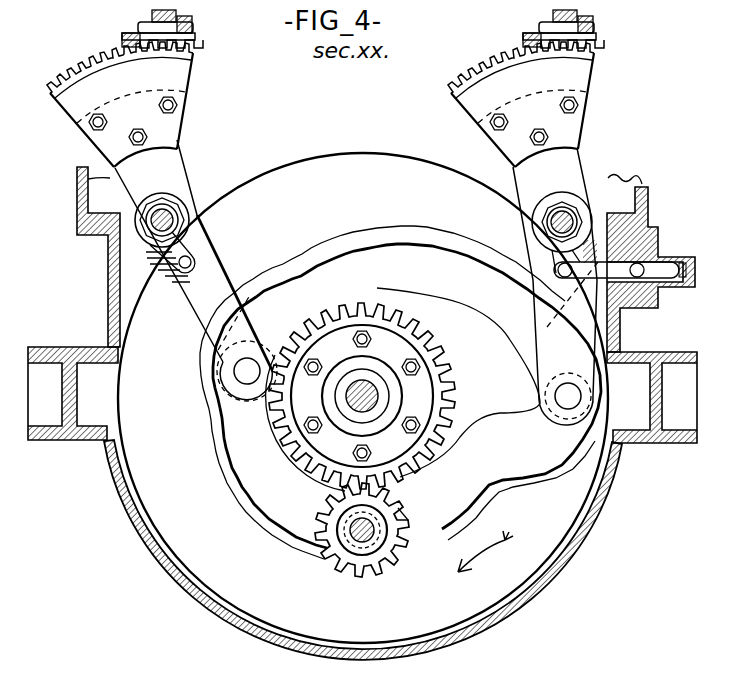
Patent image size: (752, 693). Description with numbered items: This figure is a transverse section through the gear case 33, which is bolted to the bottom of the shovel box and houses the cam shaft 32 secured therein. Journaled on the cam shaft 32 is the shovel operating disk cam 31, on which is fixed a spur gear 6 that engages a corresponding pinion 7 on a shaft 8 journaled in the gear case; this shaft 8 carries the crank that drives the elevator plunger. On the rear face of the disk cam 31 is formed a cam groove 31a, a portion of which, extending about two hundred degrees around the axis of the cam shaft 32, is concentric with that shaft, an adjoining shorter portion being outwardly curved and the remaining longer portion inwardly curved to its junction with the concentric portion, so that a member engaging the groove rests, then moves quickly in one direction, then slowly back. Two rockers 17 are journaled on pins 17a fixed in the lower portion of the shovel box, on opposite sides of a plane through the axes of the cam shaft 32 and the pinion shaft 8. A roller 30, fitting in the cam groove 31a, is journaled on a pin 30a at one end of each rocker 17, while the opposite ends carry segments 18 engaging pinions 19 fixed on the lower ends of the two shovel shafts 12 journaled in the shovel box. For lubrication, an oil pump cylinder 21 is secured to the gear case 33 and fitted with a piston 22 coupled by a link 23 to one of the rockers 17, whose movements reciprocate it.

The spur gear 6 is at (440, 368).
The pinion 7 is at (341, 571).
The pinion shaft 8 is at (406, 519).
The shovel shaft 12 is at (146, 20).
The rocker 17 is at (210, 272).
The pin 17a is at (162, 218).
The segment 18 is at (178, 58).
The pinion 19 is at (196, 41).
The cylinder 21 is at (664, 260).
The piston 22 is at (668, 286).
The link 23 is at (588, 280).
The roller 30 is at (248, 388).
The pin 30a is at (240, 372).
The shovel operating disk cam 31 is at (340, 168).
The cam groove 31a is at (293, 498).
The cam shaft 32 is at (358, 397).
The gear case 33 is at (518, 596).